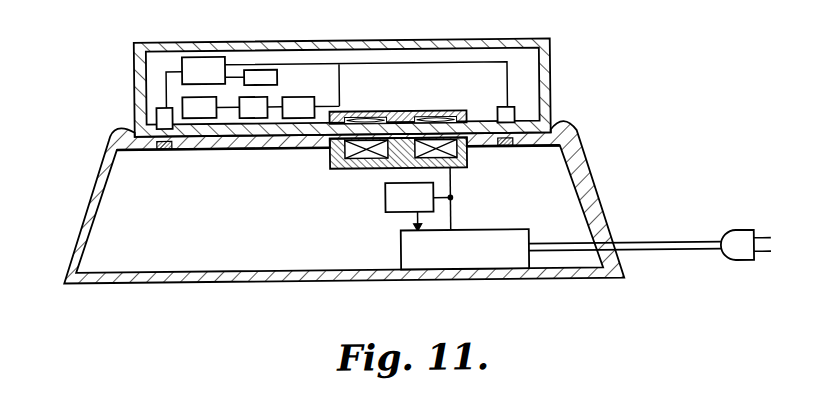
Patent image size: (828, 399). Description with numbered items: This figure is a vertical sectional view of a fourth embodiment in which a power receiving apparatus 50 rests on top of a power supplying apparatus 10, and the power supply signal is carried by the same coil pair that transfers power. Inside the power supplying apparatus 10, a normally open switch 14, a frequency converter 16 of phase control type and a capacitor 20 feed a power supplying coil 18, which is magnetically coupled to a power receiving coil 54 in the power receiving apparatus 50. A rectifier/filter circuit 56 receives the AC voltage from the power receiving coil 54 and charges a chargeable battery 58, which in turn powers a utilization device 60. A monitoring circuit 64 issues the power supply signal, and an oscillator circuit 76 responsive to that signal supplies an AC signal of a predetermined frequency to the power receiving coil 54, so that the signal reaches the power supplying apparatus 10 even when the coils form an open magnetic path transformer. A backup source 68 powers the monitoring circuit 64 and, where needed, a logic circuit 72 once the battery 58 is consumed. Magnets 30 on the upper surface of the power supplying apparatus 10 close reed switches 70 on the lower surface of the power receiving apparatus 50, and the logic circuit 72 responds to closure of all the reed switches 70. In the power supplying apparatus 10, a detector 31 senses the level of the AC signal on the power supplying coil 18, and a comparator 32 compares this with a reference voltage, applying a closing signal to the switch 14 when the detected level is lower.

The power supplying apparatus 10 is at (611, 212).
The normally open switch 14 is at (587, 216).
The frequency converter 16 is at (587, 216).
The power supplying coil 18 is at (363, 160).
The capacitor 20 is at (480, 242).
The magnets 30 is at (165, 154).
The detector 31 is at (381, 217).
The comparator 32 is at (385, 203).
The power receiving apparatus 50 is at (562, 63).
The power receiving coil 54 is at (383, 113).
The rectifier/filter circuit 56 is at (308, 113).
The chargeable battery 58 is at (261, 113).
The utilization device 60 is at (207, 113).
The monitoring circuit 64 is at (245, 42).
The backup source 68 is at (278, 76).
The reed switches 70 is at (157, 112).
The logic circuit 72 is at (245, 42).
The oscillator circuit 76 is at (202, 60).